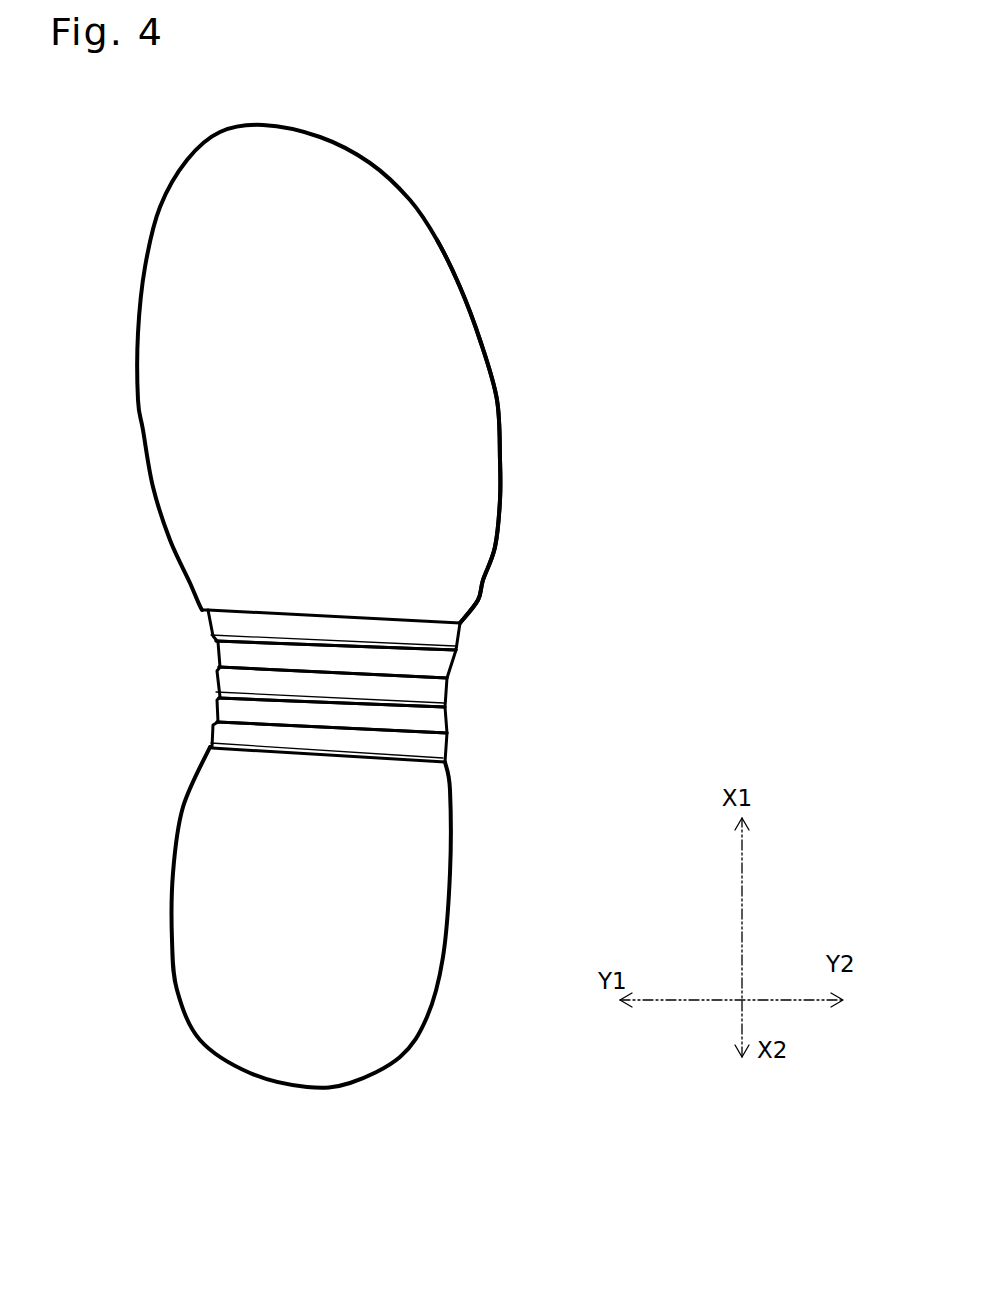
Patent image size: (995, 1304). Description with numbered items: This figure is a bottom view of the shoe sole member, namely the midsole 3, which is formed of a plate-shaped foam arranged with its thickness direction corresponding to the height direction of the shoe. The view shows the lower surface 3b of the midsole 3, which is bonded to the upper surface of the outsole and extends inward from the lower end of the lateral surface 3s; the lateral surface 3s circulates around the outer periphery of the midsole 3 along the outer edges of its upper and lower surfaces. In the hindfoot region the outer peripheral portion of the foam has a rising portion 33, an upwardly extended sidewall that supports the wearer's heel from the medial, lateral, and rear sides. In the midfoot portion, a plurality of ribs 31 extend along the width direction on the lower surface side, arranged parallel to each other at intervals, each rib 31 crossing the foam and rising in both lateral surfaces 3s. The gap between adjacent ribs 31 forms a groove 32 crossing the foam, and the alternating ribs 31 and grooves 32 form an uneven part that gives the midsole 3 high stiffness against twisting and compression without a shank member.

The midsole 3 is at (358, 606).
The lower surface 3b is at (433, 398).
The lateral surface 3s is at (505, 482).
The rising portion 33 is at (490, 573).
The groove 32 is at (220, 623).
The rib 31 is at (438, 665).